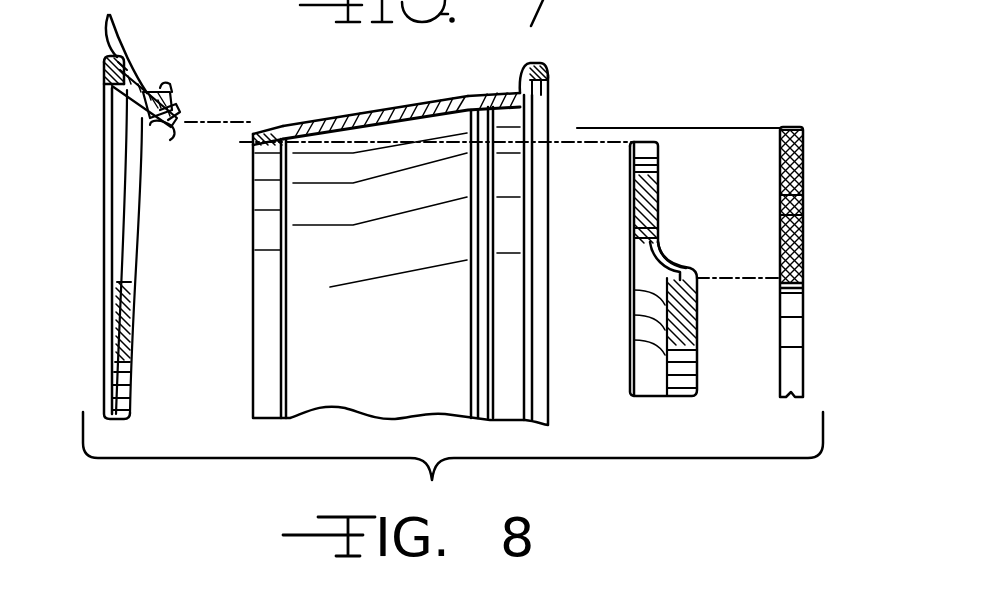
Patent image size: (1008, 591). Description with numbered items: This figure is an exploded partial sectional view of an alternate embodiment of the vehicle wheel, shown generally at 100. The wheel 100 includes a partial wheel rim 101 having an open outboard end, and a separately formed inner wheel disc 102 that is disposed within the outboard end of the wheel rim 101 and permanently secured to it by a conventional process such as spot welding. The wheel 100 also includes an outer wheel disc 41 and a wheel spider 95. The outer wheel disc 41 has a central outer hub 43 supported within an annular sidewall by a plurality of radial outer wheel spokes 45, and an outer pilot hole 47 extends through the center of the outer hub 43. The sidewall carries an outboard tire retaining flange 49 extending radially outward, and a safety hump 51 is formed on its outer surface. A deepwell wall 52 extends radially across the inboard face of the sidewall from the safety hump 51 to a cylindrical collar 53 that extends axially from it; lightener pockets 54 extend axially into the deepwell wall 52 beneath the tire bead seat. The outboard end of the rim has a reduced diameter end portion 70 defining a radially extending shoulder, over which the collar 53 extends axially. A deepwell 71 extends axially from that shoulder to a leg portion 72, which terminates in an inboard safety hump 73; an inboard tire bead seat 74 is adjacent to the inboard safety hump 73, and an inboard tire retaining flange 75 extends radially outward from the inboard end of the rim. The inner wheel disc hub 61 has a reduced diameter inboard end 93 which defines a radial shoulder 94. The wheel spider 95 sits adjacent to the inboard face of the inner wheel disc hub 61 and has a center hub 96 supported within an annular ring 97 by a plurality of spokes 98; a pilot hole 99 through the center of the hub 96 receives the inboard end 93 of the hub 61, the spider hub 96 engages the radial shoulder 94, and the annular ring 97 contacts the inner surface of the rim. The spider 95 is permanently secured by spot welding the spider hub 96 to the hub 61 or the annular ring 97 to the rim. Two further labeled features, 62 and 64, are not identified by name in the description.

The outer wheel disc 41 is at (102, 168).
The outer hub 43 is at (132, 323).
The outer wheel spokes 45 is at (137, 213).
The outer pilot hole 47 is at (187, 380).
The outboard tire retaining flange 49 is at (110, 88).
The safety hump 51 is at (163, 97).
The deepwell wall 52 is at (180, 107).
The collar 53 is at (172, 126).
The lightener pockets 54 is at (179, 109).
The inner wheel disc hub 61 is at (680, 320).
The ring member 62 is at (653, 150).
The threaded ring end 64 is at (706, 394).
The reduced diameter end portion 70 is at (263, 130).
The deepwell 71 is at (291, 132).
The leg portion 72 is at (393, 107).
The inboard safety hump 73 is at (480, 90).
The inboard tire bead seat 74 is at (510, 90).
The inboard tire retaining flange 75 is at (547, 93).
The inboard end 93 is at (683, 277).
The radial shoulder 94 is at (632, 243).
The wheel spider 95 is at (813, 191).
The center hub 96 is at (797, 263).
The annular ring 97 is at (790, 127).
The spokes 98 is at (757, 180).
The pilot hole 99 is at (816, 314).
The vehicle wheel 100 is at (563, 62).
The partial wheel rim 101 is at (403, 331).
The inner wheel disc 102 is at (664, 240).